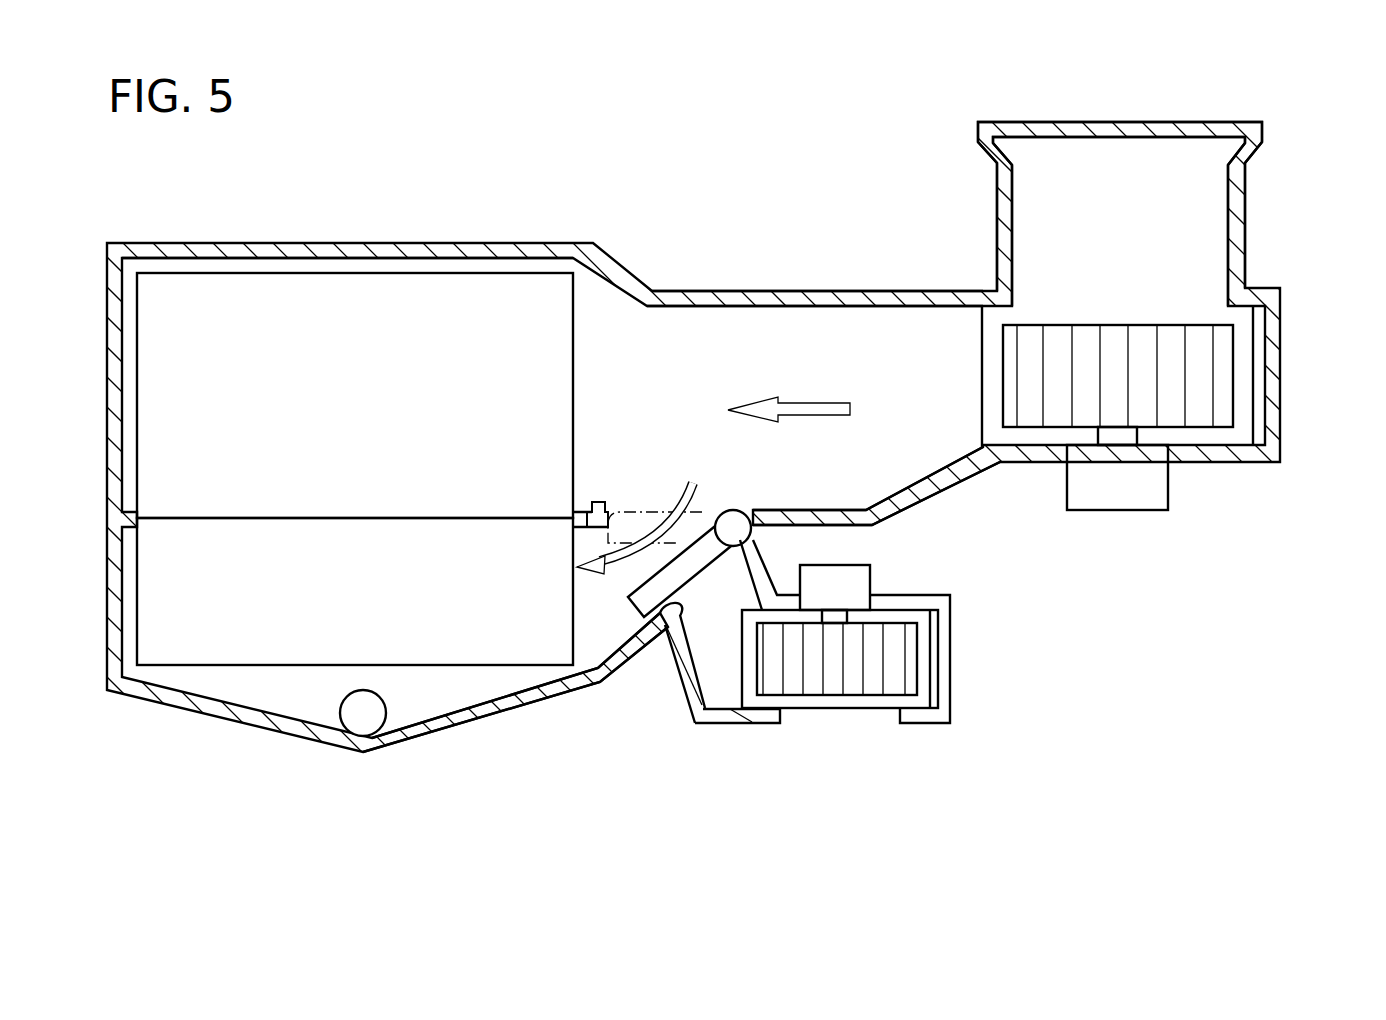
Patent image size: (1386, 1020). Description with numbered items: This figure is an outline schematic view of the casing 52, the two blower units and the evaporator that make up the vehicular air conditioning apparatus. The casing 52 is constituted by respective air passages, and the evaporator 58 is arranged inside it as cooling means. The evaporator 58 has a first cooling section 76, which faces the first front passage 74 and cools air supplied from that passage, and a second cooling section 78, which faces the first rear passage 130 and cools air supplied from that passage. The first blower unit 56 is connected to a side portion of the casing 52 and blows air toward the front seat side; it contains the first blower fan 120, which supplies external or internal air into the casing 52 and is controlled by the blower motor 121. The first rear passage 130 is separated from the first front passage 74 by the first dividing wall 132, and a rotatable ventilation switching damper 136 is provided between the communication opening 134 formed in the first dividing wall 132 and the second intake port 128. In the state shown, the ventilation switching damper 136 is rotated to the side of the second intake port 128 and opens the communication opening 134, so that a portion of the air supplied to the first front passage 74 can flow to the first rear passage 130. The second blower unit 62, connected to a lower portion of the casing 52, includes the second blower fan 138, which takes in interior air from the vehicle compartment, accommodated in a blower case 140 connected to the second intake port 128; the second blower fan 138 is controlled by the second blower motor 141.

The casing 52 is at (428, 240).
The evaporator 58 is at (246, 264).
The first cooling section 76 is at (167, 349).
The second cooling section 78 is at (167, 558).
The first front passage 74 is at (803, 345).
The first blower unit 56 is at (1173, 347).
The first blower fan 120 is at (1113, 337).
The blower motor 121 is at (1113, 497).
The first dividing wall 132 is at (817, 521).
The communication opening 134 is at (610, 516).
The first rear passage 130 is at (588, 641).
The ventilation switching damper 136 is at (690, 570).
The second intake port 128 is at (688, 688).
The second blower unit 62 is at (769, 745).
The blower case 140 is at (935, 713).
The second blower fan 138 is at (830, 677).
The second blower motor 141 is at (841, 569).